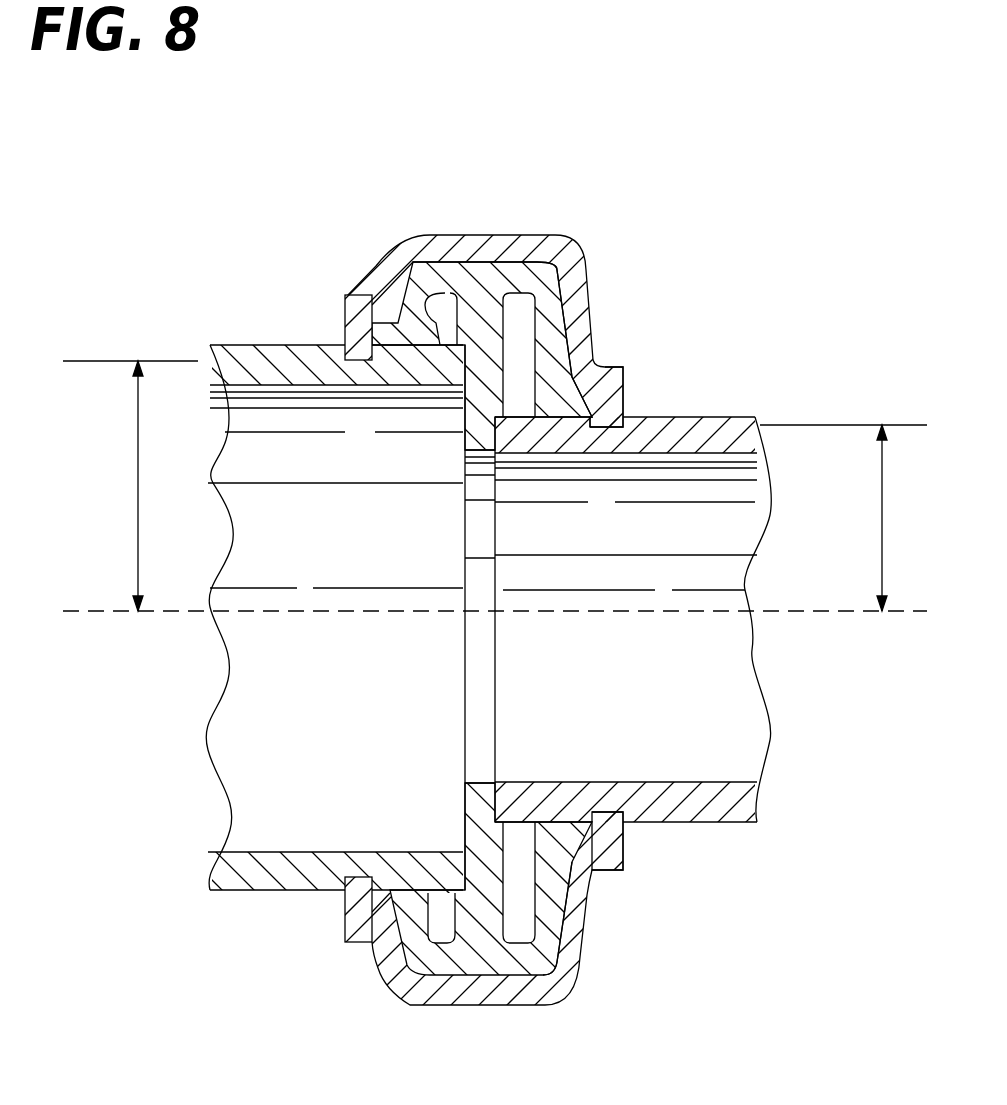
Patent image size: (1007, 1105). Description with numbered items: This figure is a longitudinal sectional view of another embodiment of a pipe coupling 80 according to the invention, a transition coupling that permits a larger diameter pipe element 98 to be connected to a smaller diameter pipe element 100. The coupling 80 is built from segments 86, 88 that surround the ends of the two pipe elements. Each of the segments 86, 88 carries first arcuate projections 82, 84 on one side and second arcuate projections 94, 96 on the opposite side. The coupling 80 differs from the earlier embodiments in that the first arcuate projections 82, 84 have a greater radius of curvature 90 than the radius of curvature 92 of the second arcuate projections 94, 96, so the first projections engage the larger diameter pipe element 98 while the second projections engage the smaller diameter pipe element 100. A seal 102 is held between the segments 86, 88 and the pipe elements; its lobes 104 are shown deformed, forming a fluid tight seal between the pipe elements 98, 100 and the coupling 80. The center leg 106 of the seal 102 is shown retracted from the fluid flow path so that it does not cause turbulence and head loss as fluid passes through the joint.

The pipe coupling 80 is at (629, 314).
The first arcuate projection 82 is at (342, 892).
The first arcuate projection 84 is at (357, 345).
The segment 86 is at (458, 1006).
The segment 88 is at (528, 240).
The radius of curvature 90 is at (138, 479).
The radius of curvature 92 is at (882, 507).
The second arcuate projection 94 is at (610, 817).
The second arcuate projection 96 is at (607, 410).
The larger diameter pipe element 98 is at (220, 873).
The smaller diameter pipe element 100 is at (730, 800).
The seal 102 is at (440, 870).
The lobe 104 is at (540, 947).
The center leg 106 is at (472, 807).